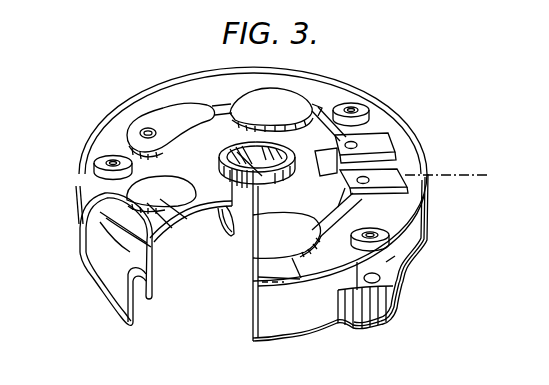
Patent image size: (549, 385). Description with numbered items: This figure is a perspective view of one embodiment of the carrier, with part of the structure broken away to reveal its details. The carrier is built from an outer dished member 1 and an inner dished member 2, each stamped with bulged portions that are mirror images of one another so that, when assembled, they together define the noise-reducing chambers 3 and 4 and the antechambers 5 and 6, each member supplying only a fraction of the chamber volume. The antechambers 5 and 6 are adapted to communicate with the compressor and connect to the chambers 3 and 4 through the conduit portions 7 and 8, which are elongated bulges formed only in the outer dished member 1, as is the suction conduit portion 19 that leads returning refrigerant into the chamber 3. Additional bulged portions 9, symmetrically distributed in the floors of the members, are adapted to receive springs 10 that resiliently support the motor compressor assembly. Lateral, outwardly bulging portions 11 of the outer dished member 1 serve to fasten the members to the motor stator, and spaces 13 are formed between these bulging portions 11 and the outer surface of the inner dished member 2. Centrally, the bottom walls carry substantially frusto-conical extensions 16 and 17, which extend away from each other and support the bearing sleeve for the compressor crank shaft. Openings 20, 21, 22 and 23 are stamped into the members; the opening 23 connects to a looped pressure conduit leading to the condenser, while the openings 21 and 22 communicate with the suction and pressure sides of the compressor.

The outer dished member 1 is at (141, 91).
The inner dished member 2 is at (153, 285).
The noise-reducing chamber 3 is at (298, 240).
The noise-reducing chamber 4 is at (275, 110).
The antechamber 5 is at (402, 182).
The antechamber 6 is at (378, 138).
The conduit portion 7 is at (220, 105).
The conduit portion 8 is at (318, 106).
The bulged portion 9 is at (362, 113).
The spring 10 is at (470, 178).
The lateral outwardly bulging portion 11 is at (357, 318).
The space 13 is at (135, 307).
The frusto-conical extension 16 is at (219, 163).
The frusto-conical extension 17 is at (222, 234).
The suction conduit portion 19 is at (85, 248).
The opening 20 is at (385, 236).
The opening 21 is at (346, 191).
The opening 22 is at (338, 148).
The opening 23 is at (143, 131).